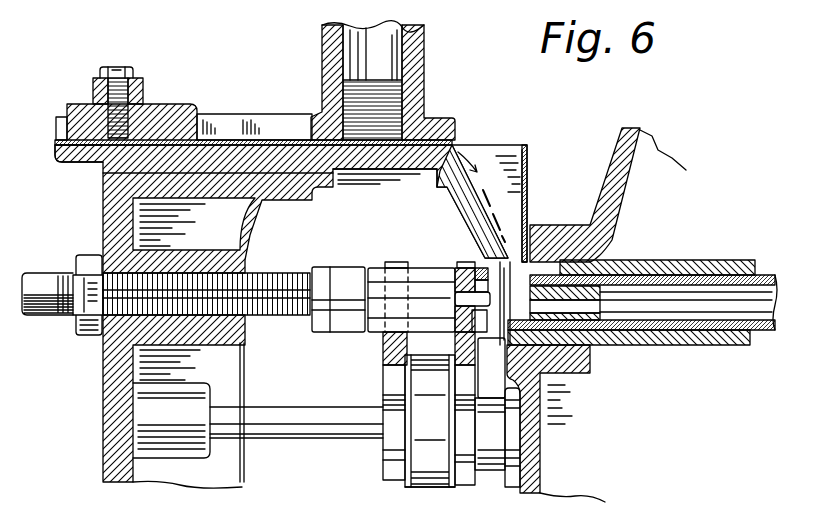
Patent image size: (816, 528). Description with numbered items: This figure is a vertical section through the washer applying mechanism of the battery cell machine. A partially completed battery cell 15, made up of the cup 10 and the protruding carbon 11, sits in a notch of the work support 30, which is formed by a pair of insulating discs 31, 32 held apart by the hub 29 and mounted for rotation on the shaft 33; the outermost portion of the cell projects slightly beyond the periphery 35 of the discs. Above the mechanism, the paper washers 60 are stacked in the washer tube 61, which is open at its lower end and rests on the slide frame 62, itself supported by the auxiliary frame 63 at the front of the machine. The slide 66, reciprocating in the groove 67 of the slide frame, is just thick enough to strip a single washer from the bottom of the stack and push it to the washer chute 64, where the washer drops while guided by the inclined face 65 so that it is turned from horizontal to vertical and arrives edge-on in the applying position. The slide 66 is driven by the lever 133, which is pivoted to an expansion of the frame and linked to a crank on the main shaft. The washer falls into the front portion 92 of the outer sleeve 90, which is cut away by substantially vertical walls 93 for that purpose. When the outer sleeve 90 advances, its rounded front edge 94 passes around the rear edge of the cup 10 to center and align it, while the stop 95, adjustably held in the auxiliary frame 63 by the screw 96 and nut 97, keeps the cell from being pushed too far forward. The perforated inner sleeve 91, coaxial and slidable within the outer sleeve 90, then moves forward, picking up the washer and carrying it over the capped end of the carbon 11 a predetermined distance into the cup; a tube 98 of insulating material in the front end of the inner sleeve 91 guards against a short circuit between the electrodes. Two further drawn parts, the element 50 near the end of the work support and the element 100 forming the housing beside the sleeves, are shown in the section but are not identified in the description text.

The cup 10 is at (476, 335).
The carbon 11 is at (455, 297).
The battery cell 15 is at (428, 268).
The hub 29 is at (430, 484).
The work support 30 is at (430, 421).
The insulating disc 31 is at (388, 455).
The insulating disc 32 is at (475, 480).
The shaft 33 is at (290, 410).
The periphery of the discs 35 is at (398, 262).
The coupling 50 is at (486, 279).
The paper washer 60 is at (377, 82).
The washer tube 61 is at (425, 68).
The slide frame 62 is at (66, 149).
The auxiliary frame 63 is at (110, 213).
The washer chute 64 is at (492, 150).
The inclined face 65 is at (462, 197).
The slide 66 is at (247, 135).
The groove 67 is at (60, 140).
The outer sleeve 90 is at (667, 262).
The inner sleeve 91 is at (643, 346).
The front portion of the outer sleeve 92 is at (515, 303).
The vertical walls 93 is at (543, 226).
The rounded front edge 94 is at (487, 320).
The stop 95 is at (345, 268).
The screw 96 is at (262, 282).
The nut 97 is at (87, 336).
The tube of insulating material 98 is at (600, 312).
The housing 100 is at (528, 494).
The lever 133 is at (157, 108).